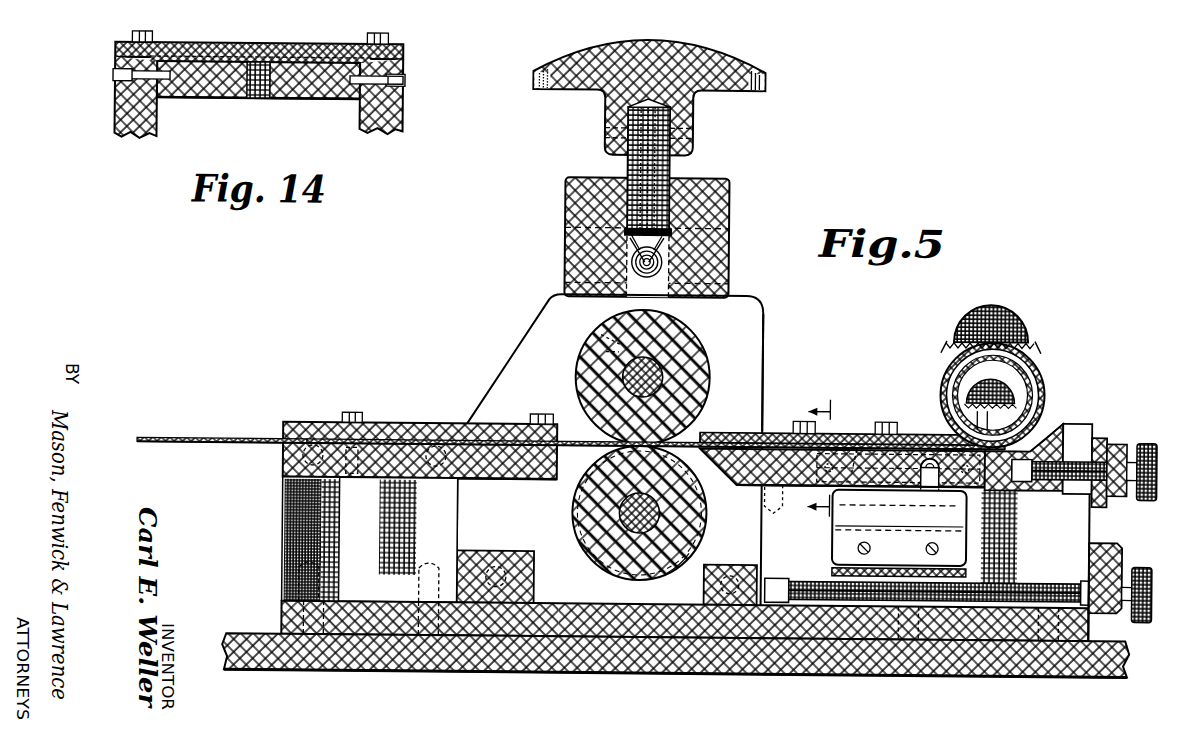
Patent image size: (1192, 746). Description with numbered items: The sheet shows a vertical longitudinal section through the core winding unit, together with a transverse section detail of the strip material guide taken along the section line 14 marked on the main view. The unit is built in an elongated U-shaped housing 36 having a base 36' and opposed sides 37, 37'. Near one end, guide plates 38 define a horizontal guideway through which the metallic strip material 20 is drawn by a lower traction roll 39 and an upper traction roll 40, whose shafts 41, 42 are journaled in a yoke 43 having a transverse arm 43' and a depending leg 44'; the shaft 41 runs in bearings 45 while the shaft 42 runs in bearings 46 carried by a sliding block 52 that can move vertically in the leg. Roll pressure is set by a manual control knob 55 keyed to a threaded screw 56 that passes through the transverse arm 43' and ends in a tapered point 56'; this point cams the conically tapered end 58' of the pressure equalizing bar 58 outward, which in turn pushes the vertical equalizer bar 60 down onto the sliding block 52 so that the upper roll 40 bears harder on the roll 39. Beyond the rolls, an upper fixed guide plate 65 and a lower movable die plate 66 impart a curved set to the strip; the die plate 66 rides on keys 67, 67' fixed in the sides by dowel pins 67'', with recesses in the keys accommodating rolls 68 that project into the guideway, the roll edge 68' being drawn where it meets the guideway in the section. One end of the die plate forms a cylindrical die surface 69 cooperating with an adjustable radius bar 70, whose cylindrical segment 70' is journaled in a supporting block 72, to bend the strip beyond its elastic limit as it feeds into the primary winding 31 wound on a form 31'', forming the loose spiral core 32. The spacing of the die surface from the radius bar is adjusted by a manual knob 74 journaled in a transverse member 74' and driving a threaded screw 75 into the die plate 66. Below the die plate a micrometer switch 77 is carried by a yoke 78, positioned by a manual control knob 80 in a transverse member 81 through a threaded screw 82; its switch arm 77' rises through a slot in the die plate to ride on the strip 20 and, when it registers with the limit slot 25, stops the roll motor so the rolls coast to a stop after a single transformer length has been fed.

In FIG. 5, the section line 14— 14 is at (829, 463).
In FIG. 14, the metallic strip material 20 is at (206, 58).
In FIG. 5, the metallic strip material 20 is at (233, 441).
In FIG. 5, the limit slot 25 is at (177, 441).
In FIG. 5, the primary winding 31 is at (1004, 313).
In FIG. 5, the form 31'' is at (1016, 339).
In FIG. 5, the spirally laminated hollow cylindrical core 32 is at (946, 377).
In FIG. 5, the housing 36 is at (346, 539).
In FIG. 5, the base 36' is at (676, 637).
In FIG. 14, the side 37 is at (112, 97).
In FIG. 14, the side 37' is at (405, 97).
In FIG. 5, the side 37' is at (290, 538).
In FIG. 5, the guide plates 38 is at (420, 426).
In FIG. 5, the lower traction roll 39 is at (700, 510).
In FIG. 5, the upper traction roll 40 is at (704, 366).
In FIG. 5, the shaft 41 is at (588, 512).
In FIG. 5, the shaft 42 is at (586, 371).
In FIG. 5, the yoke 43 is at (610, 449).
In FIG. 5, the transverse arm 43' is at (671, 237).
In FIG. 5, the depending leg 44' is at (783, 368).
In FIG. 5, the bearings 45 is at (697, 540).
In FIG. 5, the bearings 46 is at (586, 411).
In FIG. 5, the sliding block 52 is at (694, 322).
In FIG. 5, the manual control knob 55 is at (684, 50).
In FIG. 5, the threaded screw 56 is at (623, 167).
In FIG. 5, the tapered point 56' is at (597, 257).
In FIG. 5, the pressure equalizing bar 58 is at (672, 275).
In FIG. 5, the conically tapered end 58' is at (617, 275).
In FIG. 5, the equalizer bar 60 is at (727, 278).
In FIG. 14, the upper fixed guide plate 65 is at (256, 45).
In FIG. 5, the upper fixed guide plate 65 is at (770, 432).
In FIG. 14, the lower movable die plate 66 is at (198, 88).
In FIG. 5, the lower movable die plate 66 is at (1040, 490).
In FIG. 14, the key 67 is at (126, 62).
In FIG. 14, the key 67' is at (398, 69).
In FIG. 5, the key 67' is at (858, 442).
In FIG. 14, the dowel pins 67'' is at (266, 83).
In FIG. 5, the rolls 68 is at (872, 484).
In FIG. 5, the slide member edge 68' is at (725, 470).
In FIG. 5, the cylindrical die surface 69 is at (1068, 434).
In FIG. 5, the adjustable radius bar 70 is at (1040, 431).
In FIG. 5, the cylindrical segment 70' is at (1068, 418).
In FIG. 5, the supporting block 72 is at (1033, 388).
In FIG. 5, the manual knob 74 is at (1157, 457).
In FIG. 5, the transverse member 74' is at (1130, 486).
In FIG. 5, the threaded screw 75 is at (1078, 478).
In FIG. 5, the micrometer switch 77 is at (879, 527).
In FIG. 5, the switch arm 77' is at (957, 489).
In FIG. 5, the yoke 78 is at (835, 568).
In FIG. 5, the manual control knob 80 is at (1154, 609).
In FIG. 5, the transverse member 81 is at (1119, 547).
In FIG. 5, the threaded screw 82 is at (1021, 582).